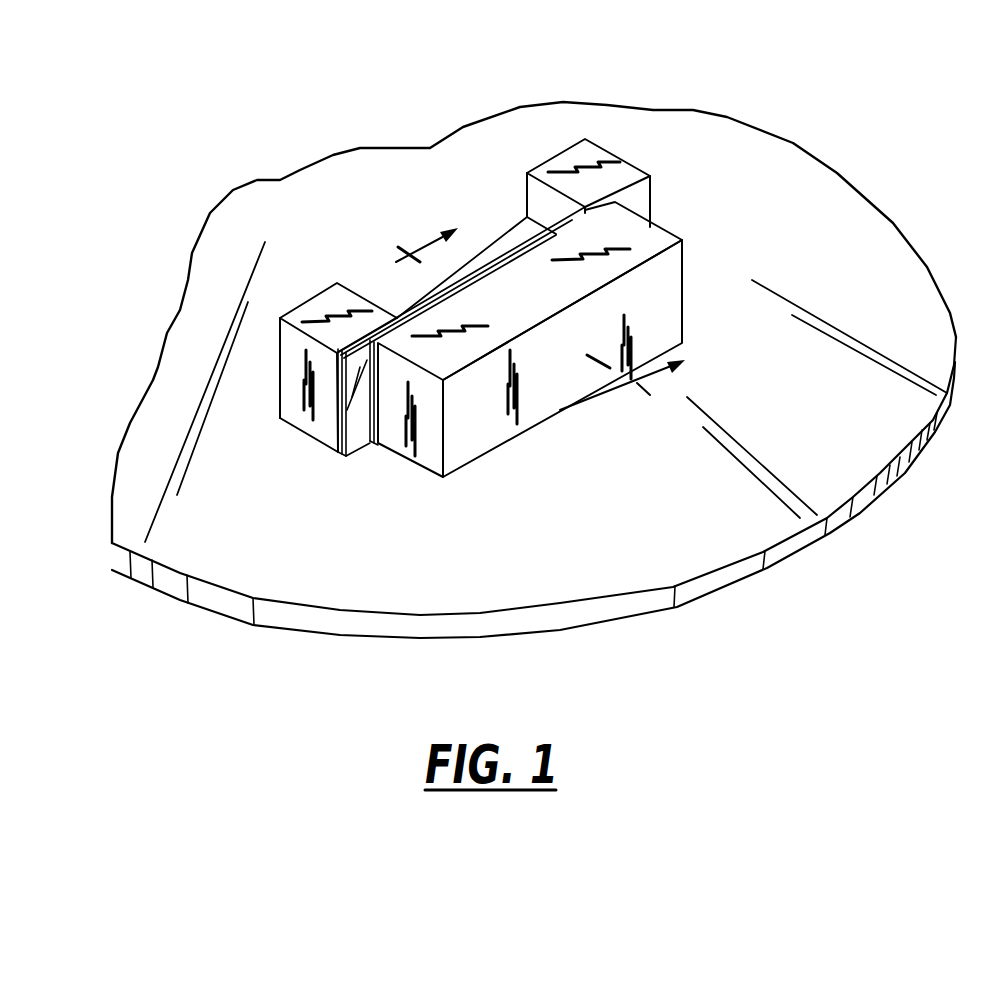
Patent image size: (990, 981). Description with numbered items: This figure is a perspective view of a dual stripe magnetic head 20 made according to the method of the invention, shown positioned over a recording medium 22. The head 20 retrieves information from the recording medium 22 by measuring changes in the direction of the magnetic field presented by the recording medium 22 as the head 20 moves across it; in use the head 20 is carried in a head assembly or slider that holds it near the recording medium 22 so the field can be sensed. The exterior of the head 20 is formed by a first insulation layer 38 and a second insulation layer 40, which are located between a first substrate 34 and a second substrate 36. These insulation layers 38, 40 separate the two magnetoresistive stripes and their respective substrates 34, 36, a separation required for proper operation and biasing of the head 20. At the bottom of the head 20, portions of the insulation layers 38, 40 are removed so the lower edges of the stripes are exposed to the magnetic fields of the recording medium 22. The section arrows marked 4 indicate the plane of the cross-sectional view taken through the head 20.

The dual stripe magnetic head 20 is at (622, 142).
The recording medium 22 is at (835, 187).
The first substrate 34 is at (326, 300).
The second substrate 36 is at (566, 390).
The first insulation layer 38 is at (650, 203).
The second insulation layer 40 is at (412, 308).
The section line 4- 4 is at (540, 316).